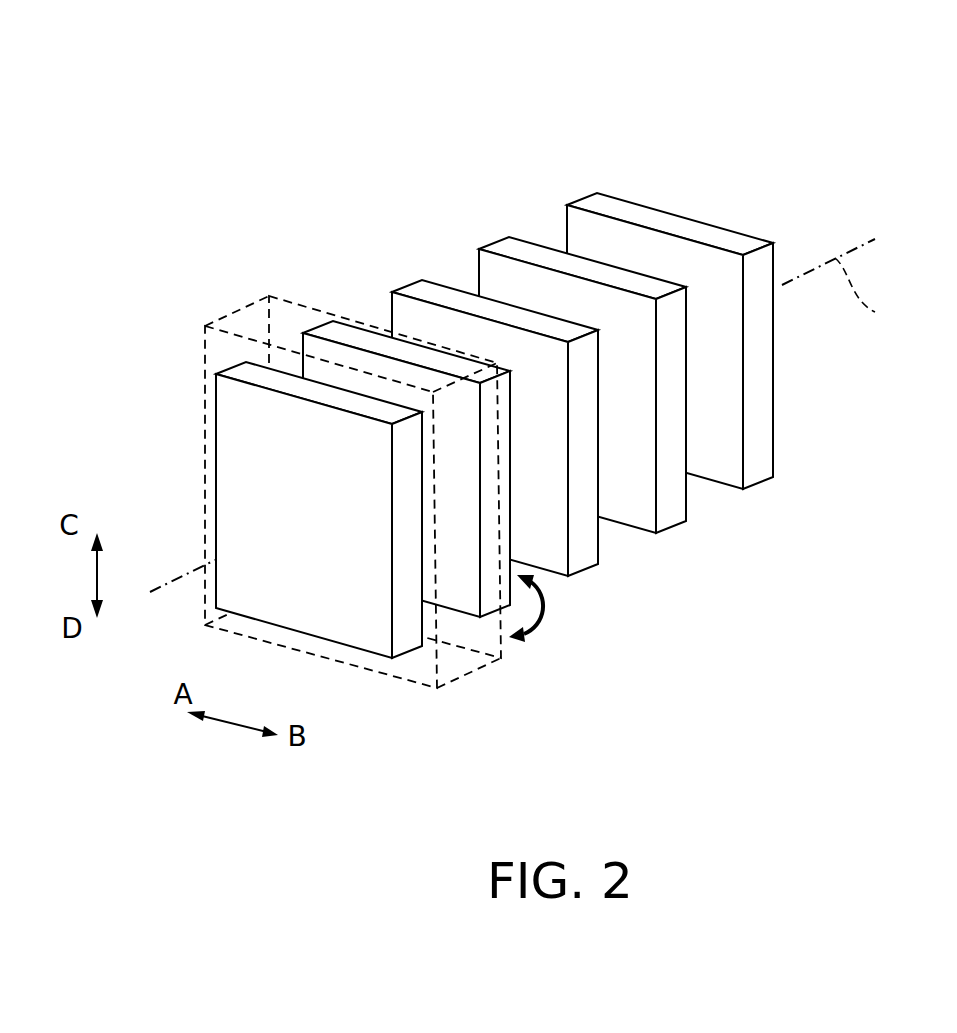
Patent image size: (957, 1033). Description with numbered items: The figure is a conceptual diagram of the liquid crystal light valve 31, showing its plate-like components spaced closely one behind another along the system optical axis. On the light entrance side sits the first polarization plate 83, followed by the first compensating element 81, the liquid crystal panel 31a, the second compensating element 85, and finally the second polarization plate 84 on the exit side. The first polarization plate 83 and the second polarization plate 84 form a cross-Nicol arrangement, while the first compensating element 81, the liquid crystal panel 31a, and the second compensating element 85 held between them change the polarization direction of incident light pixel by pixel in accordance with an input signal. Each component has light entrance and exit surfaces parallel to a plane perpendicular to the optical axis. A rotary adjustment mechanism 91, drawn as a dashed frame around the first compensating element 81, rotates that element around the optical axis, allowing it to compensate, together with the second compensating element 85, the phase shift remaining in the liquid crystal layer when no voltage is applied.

The liquid crystal light valve 31 is at (792, 57).
The liquid crystal panel 31a is at (407, 283).
The first compensating element 81 is at (322, 320).
The first polarization plate 83 is at (230, 368).
The second polarization plate 84 is at (585, 198).
The second compensating element 85 is at (493, 237).
The rotary adjustment mechanism 91 is at (478, 673).